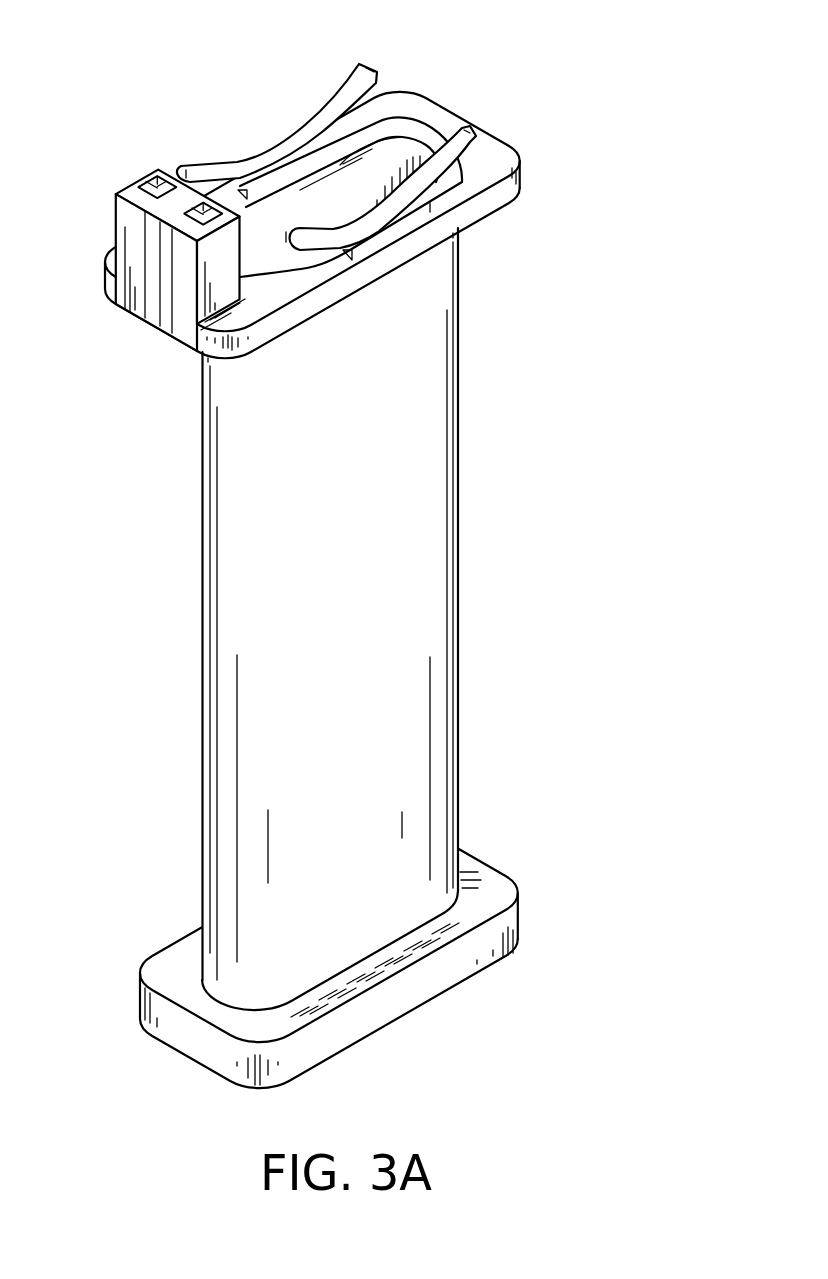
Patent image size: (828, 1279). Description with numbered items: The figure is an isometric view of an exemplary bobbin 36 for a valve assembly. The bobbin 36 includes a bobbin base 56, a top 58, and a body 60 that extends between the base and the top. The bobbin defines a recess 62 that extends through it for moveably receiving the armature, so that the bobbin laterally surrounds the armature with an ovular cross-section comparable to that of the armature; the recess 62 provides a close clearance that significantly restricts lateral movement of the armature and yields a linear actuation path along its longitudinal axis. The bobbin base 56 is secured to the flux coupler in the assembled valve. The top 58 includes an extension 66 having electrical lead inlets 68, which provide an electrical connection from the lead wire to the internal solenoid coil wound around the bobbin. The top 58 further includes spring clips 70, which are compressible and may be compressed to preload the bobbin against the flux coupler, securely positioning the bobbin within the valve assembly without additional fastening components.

The bobbin 36 is at (365, 564).
The bobbin base 56 is at (175, 1048).
The top 58 is at (425, 102).
The body 60 is at (203, 642).
The recess 62 is at (325, 200).
The extension 66 is at (115, 232).
The electrical lead inlets 68 is at (158, 182).
The spring clips 70 is at (470, 130).